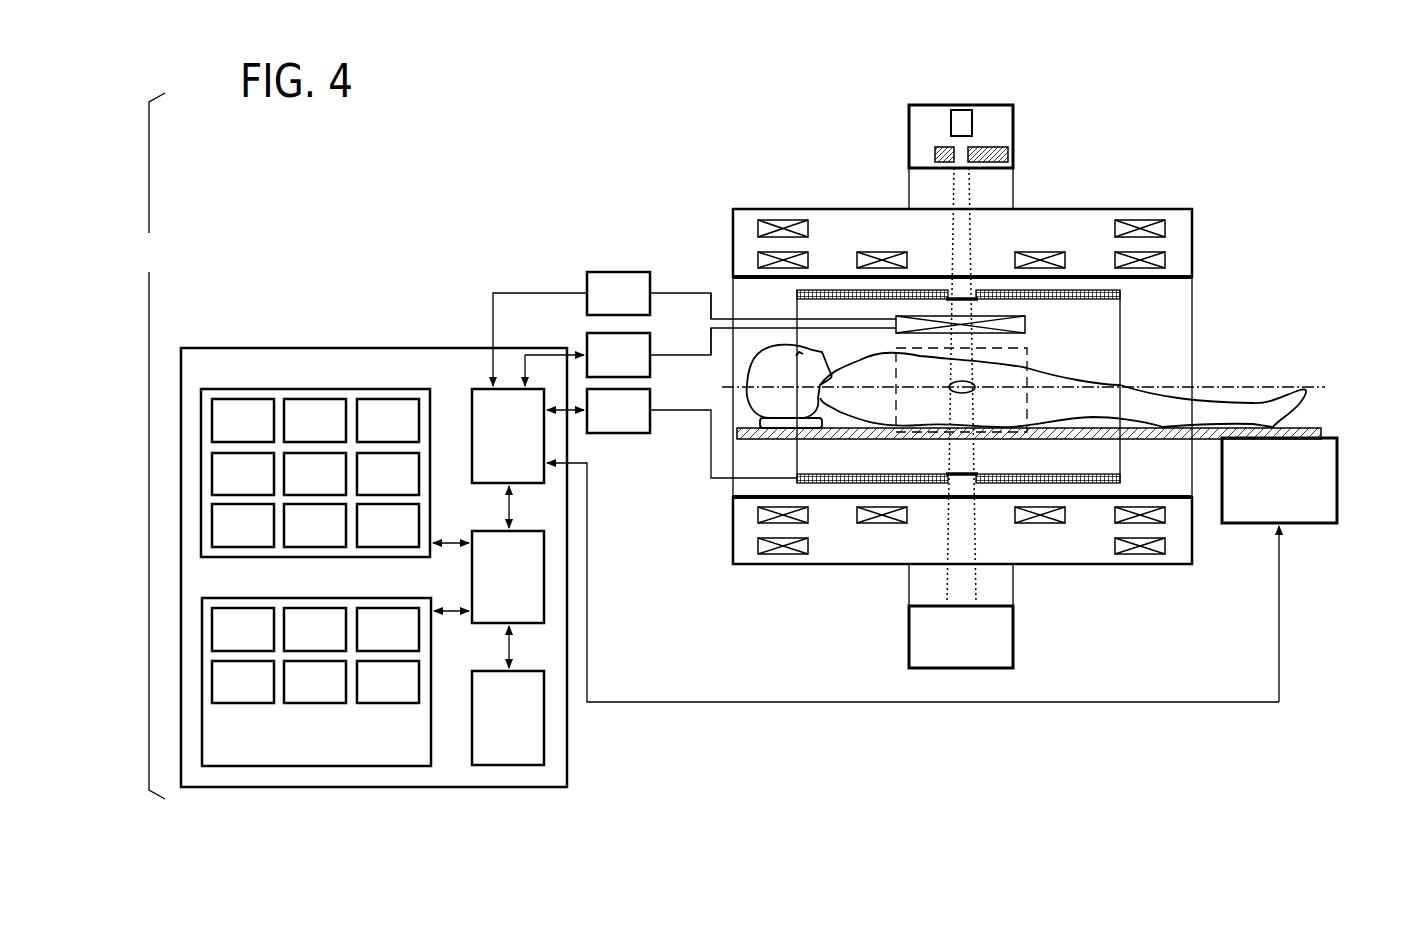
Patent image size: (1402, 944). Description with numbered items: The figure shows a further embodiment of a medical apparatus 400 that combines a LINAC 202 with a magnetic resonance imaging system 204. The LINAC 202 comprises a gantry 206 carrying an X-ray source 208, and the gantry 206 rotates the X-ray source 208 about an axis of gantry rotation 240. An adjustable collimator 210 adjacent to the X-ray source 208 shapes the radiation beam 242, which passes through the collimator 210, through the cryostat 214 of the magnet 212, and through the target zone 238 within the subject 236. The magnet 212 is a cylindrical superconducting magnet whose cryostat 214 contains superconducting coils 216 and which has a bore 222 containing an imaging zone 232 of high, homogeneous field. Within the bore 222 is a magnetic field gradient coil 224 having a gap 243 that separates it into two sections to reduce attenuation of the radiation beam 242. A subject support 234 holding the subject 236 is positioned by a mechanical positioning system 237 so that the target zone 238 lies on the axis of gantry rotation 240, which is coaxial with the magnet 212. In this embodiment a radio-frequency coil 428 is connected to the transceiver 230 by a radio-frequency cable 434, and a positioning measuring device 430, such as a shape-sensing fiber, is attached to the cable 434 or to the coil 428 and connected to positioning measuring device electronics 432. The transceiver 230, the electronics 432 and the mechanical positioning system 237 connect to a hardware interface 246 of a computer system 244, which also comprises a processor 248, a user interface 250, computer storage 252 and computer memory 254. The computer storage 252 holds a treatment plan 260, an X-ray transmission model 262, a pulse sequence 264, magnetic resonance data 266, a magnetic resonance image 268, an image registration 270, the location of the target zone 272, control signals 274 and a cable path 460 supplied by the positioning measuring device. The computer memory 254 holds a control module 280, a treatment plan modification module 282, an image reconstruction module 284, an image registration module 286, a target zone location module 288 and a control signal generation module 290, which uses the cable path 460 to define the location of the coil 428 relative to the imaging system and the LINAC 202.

The medical apparatus 400 is at (149, 446).
The LINAC 202 is at (893, 102).
The magnetic resonance imaging system 204 is at (607, 206).
The gantry 206 is at (1015, 112).
The X-ray source 208 is at (950, 122).
The adjustable collimator 210 is at (1010, 156).
The magnet 212 is at (1162, 278).
The cryostat 214 is at (1182, 270).
The superconducting coils 216 is at (757, 228).
The bore 222 is at (1140, 318).
The magnetic field gradient coil 224 is at (930, 292).
The transceiver 230 is at (637, 369).
The imaging zone 232 is at (1027, 350).
The subject support 234 is at (762, 433).
The subject 236 is at (748, 365).
The mechanical positioning system 237 is at (1310, 527).
The target zone 238 is at (958, 392).
The axis of gantry rotation 240 is at (1253, 387).
The radiation beam 242 is at (947, 538).
The gap 243 is at (968, 292).
The computer system 244 is at (400, 348).
The hardware interface 246 is at (527, 451).
The processor 248 is at (527, 592).
The user interface 250 is at (527, 734).
The computer storage 252 is at (293, 389).
The computer memory 254 is at (293, 598).
The treatment plan 260 is at (262, 436).
The X-ray transmission model 262 is at (334, 436).
The pulse sequence 264 is at (407, 436).
The magnetic resonance data 266 is at (262, 490).
The magnetic resonance image 268 is at (334, 490).
The image registration 270 is at (407, 490).
The location of the target zone 272 is at (262, 541).
The control signals 274 is at (334, 541).
The cable path 460 is at (407, 541).
The control module 280 is at (262, 645).
The treatment plan modification module 282 is at (334, 645).
The image reconstruction module 284 is at (407, 645).
The image registration module 286 is at (262, 698).
The target zone location module 288 is at (334, 698).
The control signal generation module 290 is at (407, 698).
The radio-frequency coil 428 is at (1027, 325).
The positioning measuring device 430 is at (686, 293).
The positioning measuring device electronics 432 is at (637, 307).
The radio-frequency cable 434 is at (686, 355).